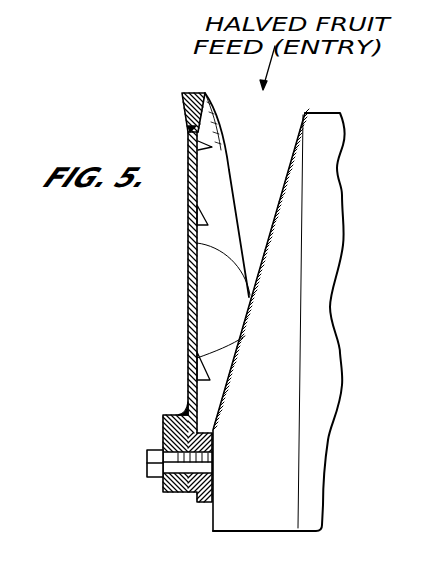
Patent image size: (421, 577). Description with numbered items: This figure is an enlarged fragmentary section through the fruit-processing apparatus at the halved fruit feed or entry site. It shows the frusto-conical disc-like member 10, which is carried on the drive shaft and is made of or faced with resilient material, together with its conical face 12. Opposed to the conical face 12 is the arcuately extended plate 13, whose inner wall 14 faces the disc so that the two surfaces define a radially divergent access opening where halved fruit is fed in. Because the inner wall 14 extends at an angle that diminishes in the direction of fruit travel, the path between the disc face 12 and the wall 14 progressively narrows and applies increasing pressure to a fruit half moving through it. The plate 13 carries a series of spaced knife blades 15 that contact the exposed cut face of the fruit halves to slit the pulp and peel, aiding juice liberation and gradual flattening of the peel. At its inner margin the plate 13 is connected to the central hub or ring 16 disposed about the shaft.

The frusto-conical disc-like member 10 is at (305, 114).
The conical face of the disc 12 is at (281, 196).
The arcuately extended plate 13 is at (194, 90).
The inner wall of the plate 14 is at (217, 190).
The knife blades 15 is at (205, 222).
The central hub or ring 16 is at (193, 498).